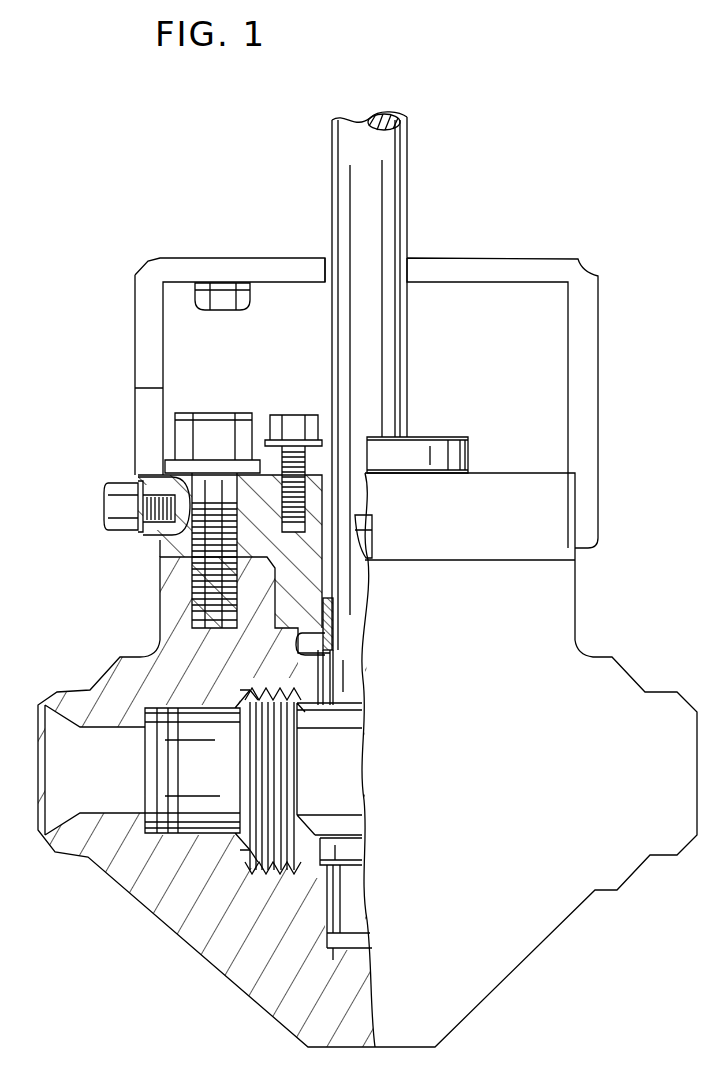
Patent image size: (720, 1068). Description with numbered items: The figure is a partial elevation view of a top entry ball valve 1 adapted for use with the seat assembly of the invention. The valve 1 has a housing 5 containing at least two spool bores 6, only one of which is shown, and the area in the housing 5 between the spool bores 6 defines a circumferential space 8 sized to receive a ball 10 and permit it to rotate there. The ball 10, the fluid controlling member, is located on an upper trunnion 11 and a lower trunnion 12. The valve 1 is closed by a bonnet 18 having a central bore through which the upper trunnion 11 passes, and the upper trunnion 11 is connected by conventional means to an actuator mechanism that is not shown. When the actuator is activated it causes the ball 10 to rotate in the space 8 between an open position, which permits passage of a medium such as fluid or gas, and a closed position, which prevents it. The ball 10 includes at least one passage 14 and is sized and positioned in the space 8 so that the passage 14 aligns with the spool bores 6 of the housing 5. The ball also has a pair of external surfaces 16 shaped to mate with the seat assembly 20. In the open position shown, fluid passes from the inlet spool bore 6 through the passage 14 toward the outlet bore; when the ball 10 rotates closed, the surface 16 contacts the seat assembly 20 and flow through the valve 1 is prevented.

The top entry ball valve 1 is at (557, 228).
The housing 5 is at (262, 980).
The spool bore 6 is at (45, 779).
The circumferential space 8 is at (330, 650).
The ball 10 is at (371, 784).
The upper trunnion 11 is at (388, 230).
The lower trunnion 12 is at (360, 945).
The passage 14 is at (335, 757).
The external surface 16 is at (357, 800).
The bonnet 18 is at (467, 492).
The seat assembly 20 is at (236, 746).